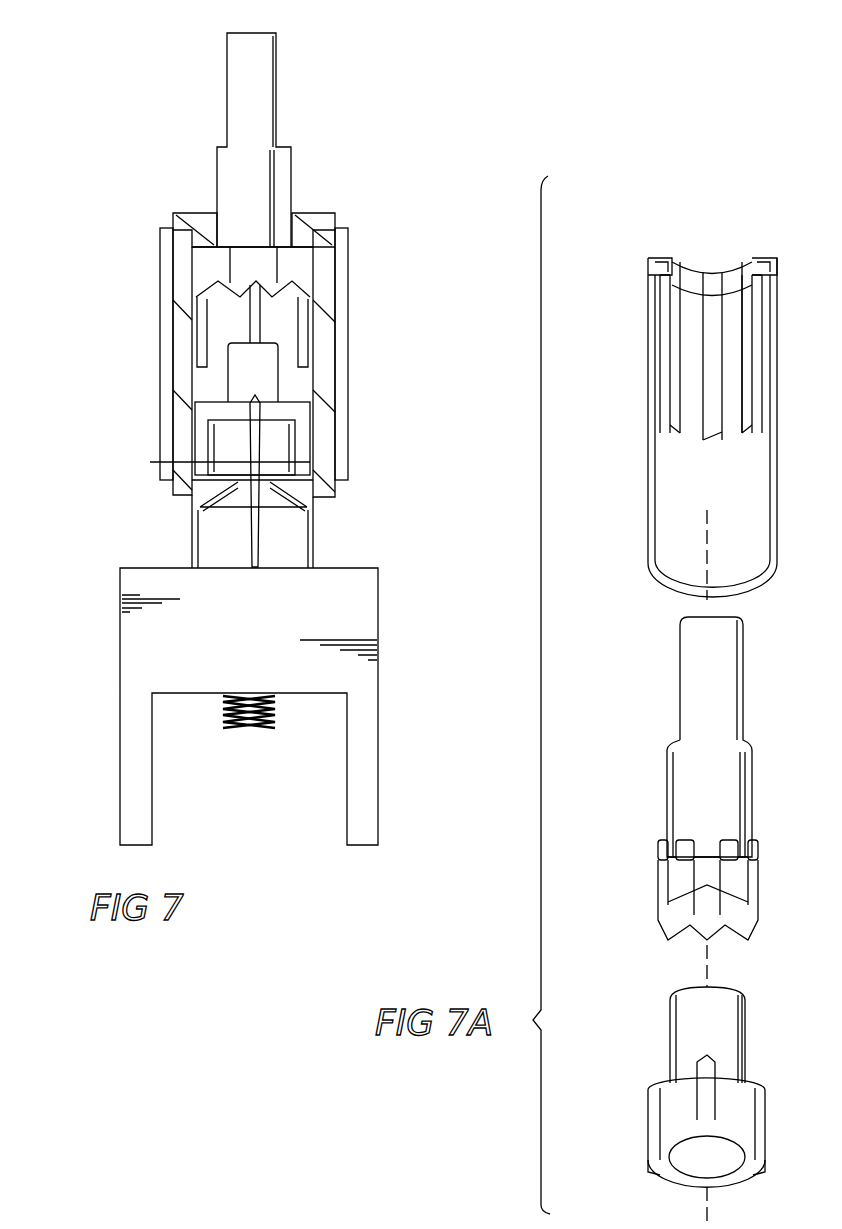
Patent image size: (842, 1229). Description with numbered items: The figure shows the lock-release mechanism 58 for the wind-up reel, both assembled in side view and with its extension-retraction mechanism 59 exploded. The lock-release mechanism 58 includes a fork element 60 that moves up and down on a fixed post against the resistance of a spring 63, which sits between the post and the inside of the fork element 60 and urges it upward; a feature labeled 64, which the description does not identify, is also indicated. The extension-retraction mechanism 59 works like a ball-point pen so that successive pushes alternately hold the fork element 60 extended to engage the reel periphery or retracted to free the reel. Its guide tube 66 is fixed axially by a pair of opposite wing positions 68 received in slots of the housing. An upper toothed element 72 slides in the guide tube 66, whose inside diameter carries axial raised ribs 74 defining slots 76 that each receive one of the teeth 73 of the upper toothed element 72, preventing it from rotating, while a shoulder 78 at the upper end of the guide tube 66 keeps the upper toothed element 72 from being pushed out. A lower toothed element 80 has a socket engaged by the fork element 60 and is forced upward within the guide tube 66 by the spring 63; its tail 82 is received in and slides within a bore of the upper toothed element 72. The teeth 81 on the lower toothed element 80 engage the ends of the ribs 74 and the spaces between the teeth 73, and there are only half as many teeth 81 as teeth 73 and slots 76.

In FIG. 7, the lock-release mechanism 58 is at (105, 518).
In FIG. 7, the extension-retraction mechanism 59 is at (357, 372).
In FIG. 7, the fork element 60 is at (130, 640).
In FIG. 7, the spring 63 is at (218, 720).
In FIG. 7, the interface plane 64 is at (148, 463).
In FIG. 7, the guide tube 66 is at (190, 300).
In FIG. 7A, the guide tube 66 is at (695, 389).
In FIG. 7, the wing positions 68 is at (163, 360).
In FIG. 7, the upper toothed element 72 is at (243, 130).
In FIG. 7A, the upper toothed element 72 is at (735, 762).
In FIG. 7, the teeth 73 is at (187, 232).
In FIG. 7A, the teeth 73 is at (740, 848).
In FIG. 7, the axial raised ribs 74 is at (196, 333).
In FIG. 7A, the axial raised ribs 74 is at (668, 345).
In FIG. 7A, the slots 76 is at (690, 386).
In FIG. 7A, the shoulder 78 is at (670, 262).
In FIG. 7, the lower toothed element 80 is at (205, 430).
In FIG. 7A, the lower toothed element 80 is at (750, 995).
In FIG. 7, the teeth 81 is at (302, 440).
In FIG. 7A, the teeth 81 is at (712, 1063).
In FIG. 7, the tail 82 is at (268, 358).
In FIG. 7A, the tail 82 is at (677, 1022).